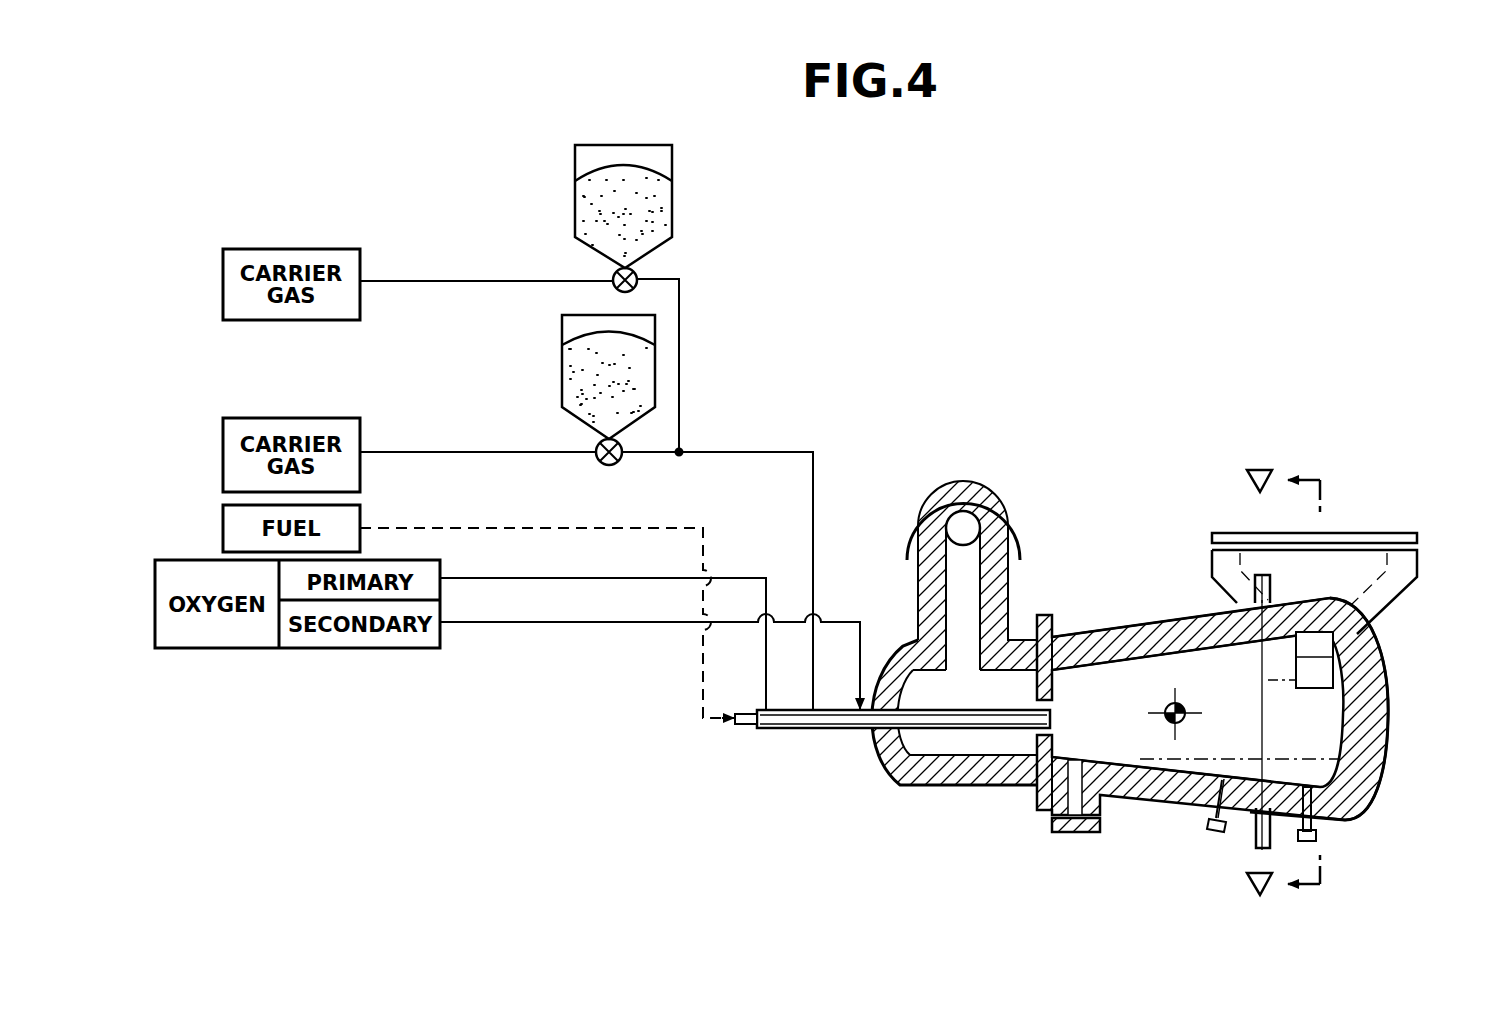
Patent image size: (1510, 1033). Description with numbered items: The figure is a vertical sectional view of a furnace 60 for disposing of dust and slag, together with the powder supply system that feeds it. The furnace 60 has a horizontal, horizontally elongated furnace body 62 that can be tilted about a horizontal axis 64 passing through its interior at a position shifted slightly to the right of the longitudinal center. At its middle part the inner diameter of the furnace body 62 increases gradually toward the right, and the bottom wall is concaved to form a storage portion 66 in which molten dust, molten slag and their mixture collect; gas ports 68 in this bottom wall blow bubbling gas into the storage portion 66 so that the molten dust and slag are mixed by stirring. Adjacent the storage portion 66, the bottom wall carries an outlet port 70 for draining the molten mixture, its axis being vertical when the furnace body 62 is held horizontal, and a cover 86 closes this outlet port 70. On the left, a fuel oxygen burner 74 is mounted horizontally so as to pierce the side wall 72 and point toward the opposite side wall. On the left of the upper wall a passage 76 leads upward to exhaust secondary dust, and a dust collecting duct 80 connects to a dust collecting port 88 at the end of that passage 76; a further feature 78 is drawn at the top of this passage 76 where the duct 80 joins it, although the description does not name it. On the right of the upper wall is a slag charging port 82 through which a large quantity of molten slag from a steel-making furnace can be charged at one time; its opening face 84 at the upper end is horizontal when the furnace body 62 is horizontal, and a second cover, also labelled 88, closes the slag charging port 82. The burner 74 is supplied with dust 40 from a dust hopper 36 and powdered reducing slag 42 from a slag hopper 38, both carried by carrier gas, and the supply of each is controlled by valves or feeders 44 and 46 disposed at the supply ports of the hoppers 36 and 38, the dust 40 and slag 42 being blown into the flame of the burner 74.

The dust hopper 36 is at (575, 326).
The slag hopper 38 is at (585, 158).
The dust 40 is at (578, 376).
The powdered reducing slag 42 is at (590, 194).
The valve or feeder 44 is at (615, 284).
The valve or feeder 46 is at (596, 461).
The furnace 60 is at (800, 815).
The furnace body 62 is at (1106, 606).
The horizontal axis 64 is at (1177, 703).
The storage portion 66 is at (1325, 773).
The gas ports 68 is at (1215, 800).
The outlet port 70 is at (1050, 808).
The side wall 72 is at (882, 762).
The fuel oxygen burner 74 is at (813, 742).
The passage 76 is at (950, 598).
The pivot bore 78 is at (960, 522).
The dust collecting duct 80 is at (918, 506).
The slag charging port 82 is at (1392, 590).
The opening face 84 is at (1282, 548).
The cover 86 is at (1092, 834).
The dust collecting port 88 is at (1418, 537).